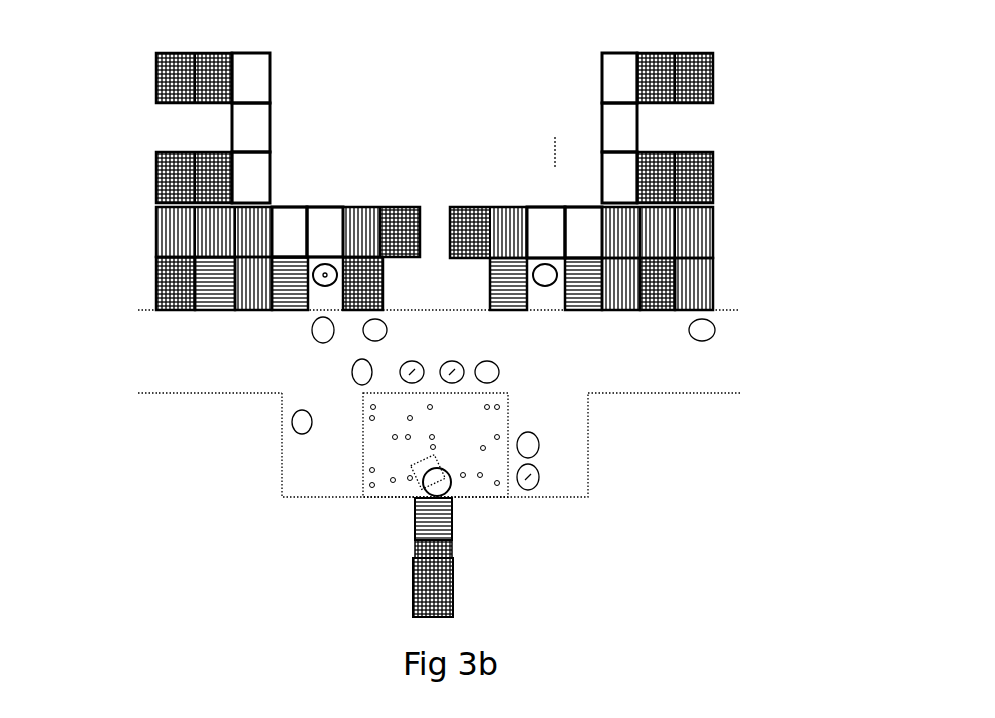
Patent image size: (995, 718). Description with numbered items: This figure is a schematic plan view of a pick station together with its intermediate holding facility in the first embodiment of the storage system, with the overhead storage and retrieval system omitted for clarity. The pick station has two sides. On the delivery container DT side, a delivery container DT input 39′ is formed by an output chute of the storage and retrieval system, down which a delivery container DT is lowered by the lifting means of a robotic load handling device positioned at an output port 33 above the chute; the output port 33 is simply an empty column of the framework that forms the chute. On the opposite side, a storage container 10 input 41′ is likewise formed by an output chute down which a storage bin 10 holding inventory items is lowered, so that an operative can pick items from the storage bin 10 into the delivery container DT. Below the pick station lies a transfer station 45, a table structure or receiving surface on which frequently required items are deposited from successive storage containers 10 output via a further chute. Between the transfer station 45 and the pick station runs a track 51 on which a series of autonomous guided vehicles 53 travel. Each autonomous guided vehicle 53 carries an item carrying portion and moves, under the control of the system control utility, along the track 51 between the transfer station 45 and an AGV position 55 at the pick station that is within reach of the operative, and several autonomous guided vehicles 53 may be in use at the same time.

The delivery container DT is at (252, 85).
The storage bin 10 is at (323, 228).
The delivery container input 39′ is at (688, 73).
The storage container input 41′ is at (582, 290).
The transfer station 45 is at (390, 447).
The track 51 is at (167, 338).
The autonomous guided vehicle 53 is at (312, 331).
The AGV position 55 is at (323, 297).
The output port 33 is at (435, 595).